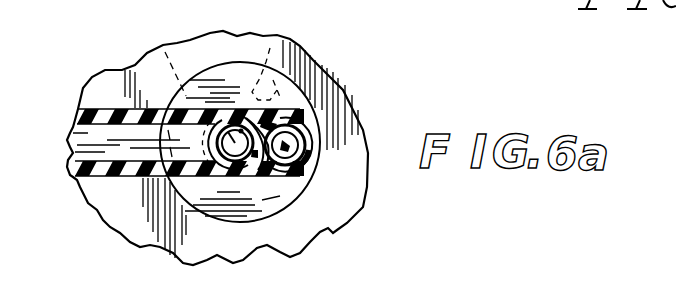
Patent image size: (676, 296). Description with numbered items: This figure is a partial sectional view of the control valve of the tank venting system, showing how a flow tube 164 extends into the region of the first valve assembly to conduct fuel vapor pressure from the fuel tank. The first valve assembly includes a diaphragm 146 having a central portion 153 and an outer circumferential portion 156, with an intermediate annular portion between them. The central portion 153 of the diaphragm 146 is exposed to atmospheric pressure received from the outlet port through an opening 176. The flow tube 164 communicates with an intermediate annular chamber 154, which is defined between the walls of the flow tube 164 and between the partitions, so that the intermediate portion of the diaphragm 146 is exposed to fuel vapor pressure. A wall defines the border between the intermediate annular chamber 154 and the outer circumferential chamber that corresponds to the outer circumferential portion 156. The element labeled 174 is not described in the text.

The diaphragm 146 is at (160, 48).
The central portion 153 is at (218, 128).
The intermediate annular chamber 154 is at (284, 21).
The outer circumferential portion 156 is at (318, 78).
The flow tube 164 is at (285, 145).
The roller 174 is at (243, 128).
The opening 176 is at (80, 144).